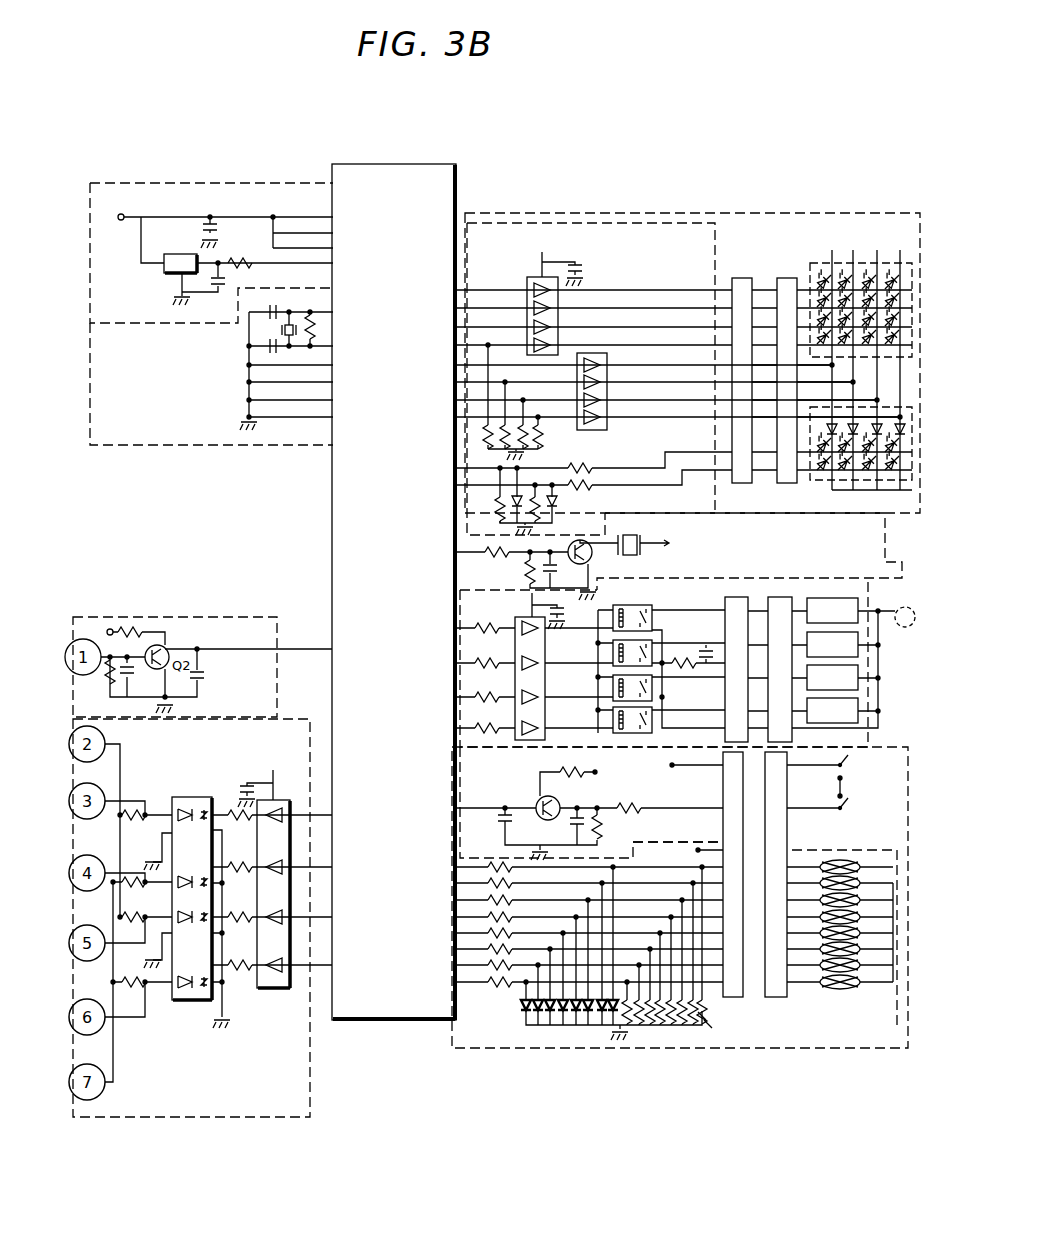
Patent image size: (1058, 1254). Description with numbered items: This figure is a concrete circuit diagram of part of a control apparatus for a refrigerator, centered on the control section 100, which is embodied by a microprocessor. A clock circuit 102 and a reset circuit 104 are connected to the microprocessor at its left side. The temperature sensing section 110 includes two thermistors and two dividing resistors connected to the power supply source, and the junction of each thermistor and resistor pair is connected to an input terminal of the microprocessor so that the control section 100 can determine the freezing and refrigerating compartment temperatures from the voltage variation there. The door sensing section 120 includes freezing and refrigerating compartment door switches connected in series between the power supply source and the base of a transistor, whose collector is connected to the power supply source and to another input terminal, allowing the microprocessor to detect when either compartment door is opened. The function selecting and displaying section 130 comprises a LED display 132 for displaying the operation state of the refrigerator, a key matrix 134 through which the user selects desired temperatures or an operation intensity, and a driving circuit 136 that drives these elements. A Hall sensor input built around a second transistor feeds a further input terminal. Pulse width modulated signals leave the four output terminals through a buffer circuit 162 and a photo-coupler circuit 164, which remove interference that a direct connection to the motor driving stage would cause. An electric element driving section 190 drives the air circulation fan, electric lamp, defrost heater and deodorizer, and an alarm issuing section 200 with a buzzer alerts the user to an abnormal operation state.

The control section 100 is at (456, 185).
The clock circuit 102 is at (180, 446).
The reset circuit 104 is at (162, 183).
The temperature sensing section 110 is at (680, 930).
The door sensing section 120 is at (908, 828).
The function selecting and displaying section 130 is at (692, 323).
The LED display 132 is at (816, 264).
The key matrix 134 is at (818, 479).
The driving circuit 136 is at (645, 223).
The buffer circuit 162 is at (271, 995).
The photo-coupler circuit 164 is at (180, 1002).
The electric element driving section 190 is at (868, 735).
The alarm issuing section 200 is at (886, 540).